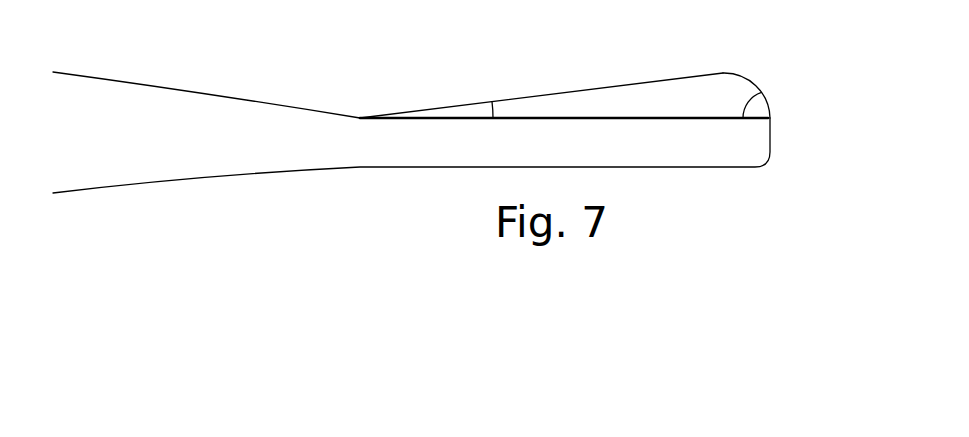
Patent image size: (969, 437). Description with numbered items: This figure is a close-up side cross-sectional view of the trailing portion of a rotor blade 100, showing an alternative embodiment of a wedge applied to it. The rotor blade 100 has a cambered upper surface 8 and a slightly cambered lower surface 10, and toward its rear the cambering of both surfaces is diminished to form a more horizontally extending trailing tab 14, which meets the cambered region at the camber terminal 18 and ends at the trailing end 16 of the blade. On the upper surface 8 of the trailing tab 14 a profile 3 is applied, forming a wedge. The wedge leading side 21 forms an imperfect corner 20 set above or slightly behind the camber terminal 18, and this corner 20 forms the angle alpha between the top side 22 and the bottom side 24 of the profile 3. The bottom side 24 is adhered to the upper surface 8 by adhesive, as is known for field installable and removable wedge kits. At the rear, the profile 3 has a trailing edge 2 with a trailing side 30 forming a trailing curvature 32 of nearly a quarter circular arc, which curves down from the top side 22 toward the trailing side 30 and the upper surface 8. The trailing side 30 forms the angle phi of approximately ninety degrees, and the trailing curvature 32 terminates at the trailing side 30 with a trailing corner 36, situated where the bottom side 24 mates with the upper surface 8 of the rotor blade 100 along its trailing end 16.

The rotor blade 100 is at (20, 125).
The upper surface 8 is at (133, 84).
The lower surface 10 is at (143, 184).
The camber terminal 18 is at (325, 118).
The profile 3 is at (608, 90).
The trailing edge 2 is at (765, 85).
The imperfect corner 20 is at (368, 110).
The wedge leading side 21 is at (358, 113).
The top side 22 is at (518, 97).
The bottom side 24 is at (488, 120).
The trailing side 30 is at (772, 92).
The trailing curvature 32 is at (777, 107).
The trailing corner 36 is at (773, 117).
The trailing end 16 is at (773, 153).
The trailing tab 14 is at (730, 157).